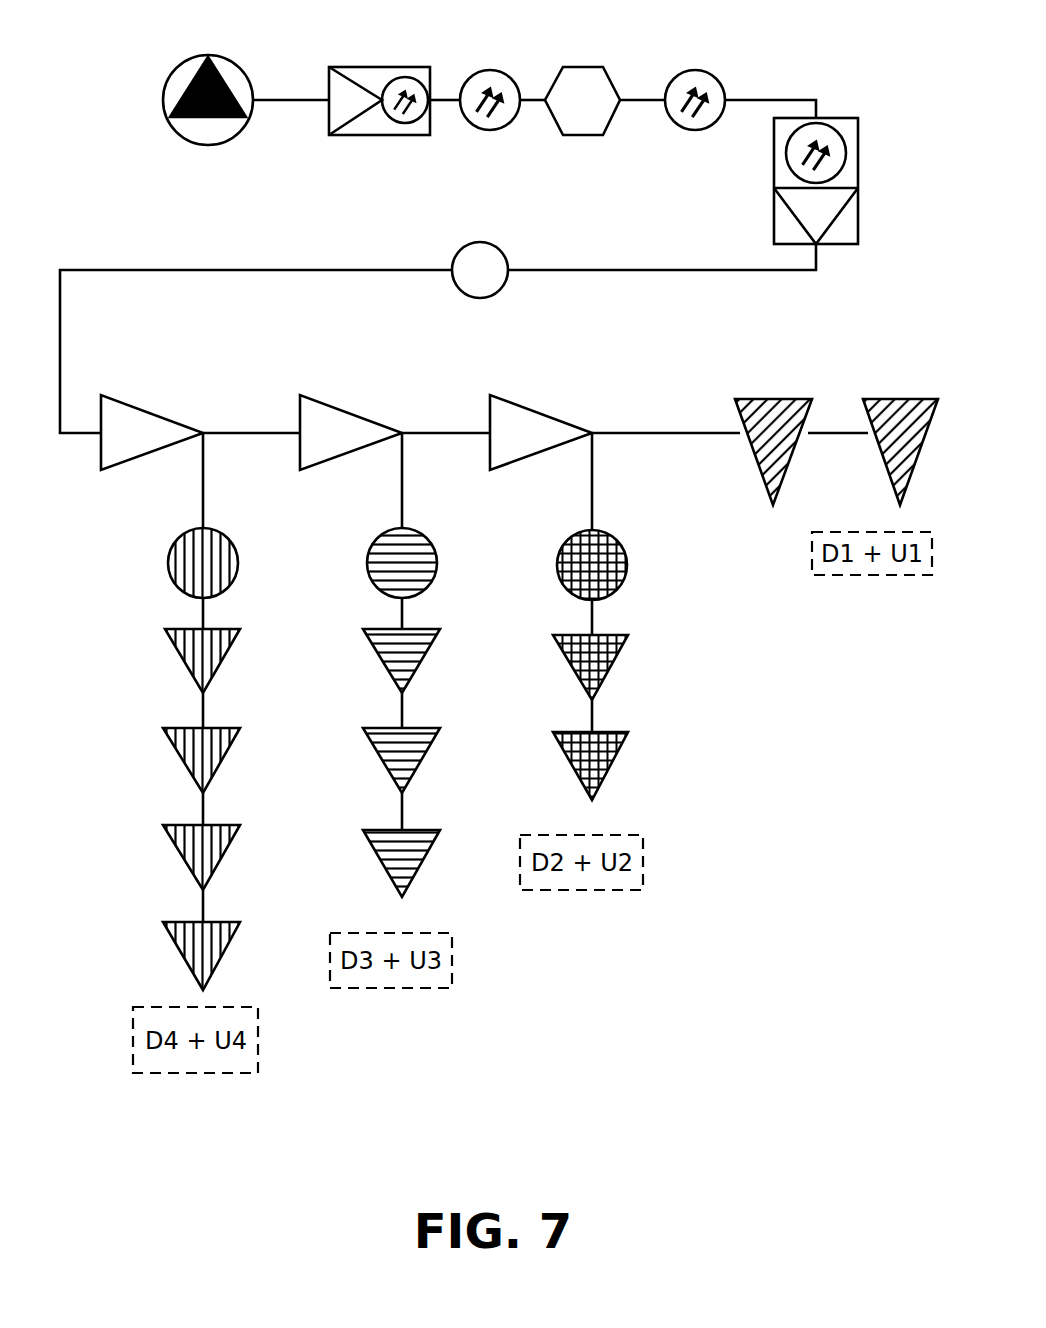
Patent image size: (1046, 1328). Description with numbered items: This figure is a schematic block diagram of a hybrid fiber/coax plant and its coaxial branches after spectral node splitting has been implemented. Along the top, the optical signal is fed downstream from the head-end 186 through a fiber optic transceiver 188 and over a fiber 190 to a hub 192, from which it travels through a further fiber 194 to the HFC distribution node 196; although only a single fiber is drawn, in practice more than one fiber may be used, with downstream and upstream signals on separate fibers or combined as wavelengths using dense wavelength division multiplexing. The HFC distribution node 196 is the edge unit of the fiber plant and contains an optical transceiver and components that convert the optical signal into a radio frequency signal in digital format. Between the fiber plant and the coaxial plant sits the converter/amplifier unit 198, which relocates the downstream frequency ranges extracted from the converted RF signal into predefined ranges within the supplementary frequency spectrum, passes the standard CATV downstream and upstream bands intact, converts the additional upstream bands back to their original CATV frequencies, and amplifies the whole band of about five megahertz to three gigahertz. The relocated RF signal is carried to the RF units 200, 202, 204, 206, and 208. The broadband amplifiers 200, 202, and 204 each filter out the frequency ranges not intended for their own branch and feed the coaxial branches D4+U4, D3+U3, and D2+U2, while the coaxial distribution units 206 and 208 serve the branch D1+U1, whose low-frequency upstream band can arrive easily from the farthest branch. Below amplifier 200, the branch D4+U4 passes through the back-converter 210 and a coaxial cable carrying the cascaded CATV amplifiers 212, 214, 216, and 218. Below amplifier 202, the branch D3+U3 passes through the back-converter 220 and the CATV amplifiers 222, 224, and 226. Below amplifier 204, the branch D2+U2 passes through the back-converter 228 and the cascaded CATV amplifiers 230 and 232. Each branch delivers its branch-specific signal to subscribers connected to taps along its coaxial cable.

The head-end 186 is at (210, 59).
The fiber optic transceiver 188 is at (384, 67).
The fiber 190 is at (490, 70).
The hub 192 is at (584, 67).
The fiber 194 is at (698, 70).
The HFC distribution node 196 is at (858, 174).
The converter/amplifier unit 198 is at (478, 242).
The broadband amplifier 200 is at (152, 412).
The broadband amplifier 202 is at (354, 416).
The broadband amplifier 204 is at (552, 412).
The coaxial distribution unit 206 is at (772, 399).
The coaxial distribution unit 208 is at (910, 399).
The back-converter unit 210 is at (239, 559).
The CATV amplifier 212 is at (242, 629).
The CATV amplifier 214 is at (236, 726).
The CATV amplifier 216 is at (234, 824).
The CATV amplifier 218 is at (234, 920).
The back-converter unit 220 is at (436, 561).
The CATV amplifier 222 is at (416, 629).
The CATV amplifier 224 is at (416, 728).
The CATV amplifier 226 is at (414, 830).
The back-converter unit 228 is at (628, 559).
The CATV amplifier 230 is at (616, 635).
The CATV amplifier 232 is at (610, 732).